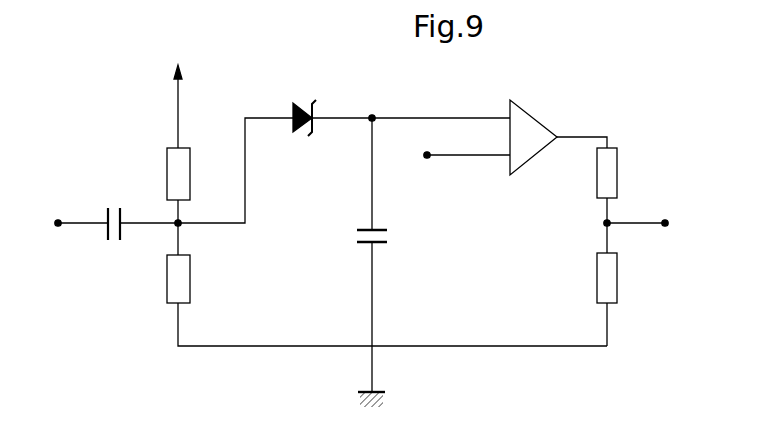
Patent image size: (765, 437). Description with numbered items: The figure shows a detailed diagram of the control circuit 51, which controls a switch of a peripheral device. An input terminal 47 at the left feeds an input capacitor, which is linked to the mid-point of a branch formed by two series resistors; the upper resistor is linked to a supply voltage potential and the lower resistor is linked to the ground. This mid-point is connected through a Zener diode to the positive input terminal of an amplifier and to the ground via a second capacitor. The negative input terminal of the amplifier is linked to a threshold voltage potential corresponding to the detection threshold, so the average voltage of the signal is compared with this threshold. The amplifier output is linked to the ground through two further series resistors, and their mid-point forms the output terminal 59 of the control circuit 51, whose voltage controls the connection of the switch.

The control circuit 51 is at (122, 96).
The input terminal 47 is at (58, 219).
The output terminal 59 is at (666, 219).